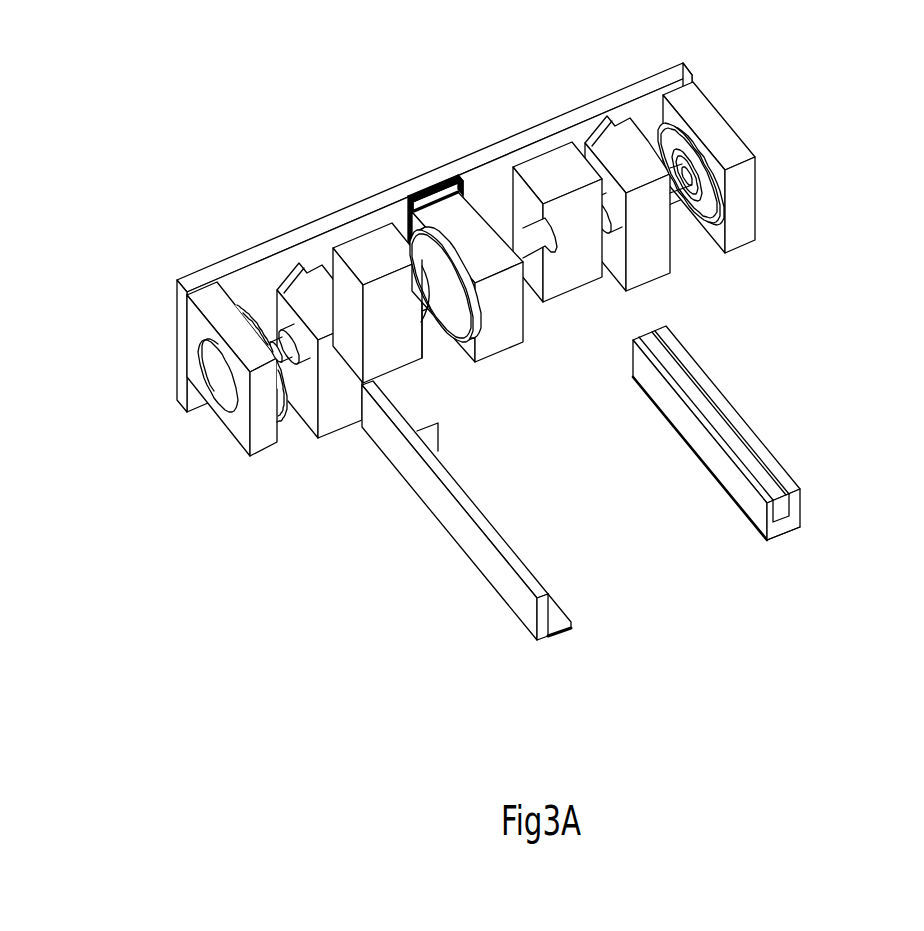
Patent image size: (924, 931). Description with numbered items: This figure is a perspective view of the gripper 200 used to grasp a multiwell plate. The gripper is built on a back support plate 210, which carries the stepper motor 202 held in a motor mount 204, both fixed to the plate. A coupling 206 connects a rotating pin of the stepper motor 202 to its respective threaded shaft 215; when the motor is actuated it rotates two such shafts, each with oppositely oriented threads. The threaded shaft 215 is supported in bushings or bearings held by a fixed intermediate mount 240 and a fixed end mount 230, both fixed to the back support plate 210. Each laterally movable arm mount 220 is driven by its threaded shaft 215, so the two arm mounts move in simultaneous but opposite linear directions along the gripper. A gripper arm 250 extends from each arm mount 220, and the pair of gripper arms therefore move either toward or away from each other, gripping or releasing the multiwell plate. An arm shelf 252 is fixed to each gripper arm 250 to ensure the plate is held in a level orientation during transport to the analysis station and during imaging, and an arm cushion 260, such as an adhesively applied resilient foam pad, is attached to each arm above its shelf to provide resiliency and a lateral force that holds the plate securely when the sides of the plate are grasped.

The gripper 200 is at (487, 349).
The stepper motor 202 is at (472, 215).
The motor mount 204 is at (500, 196).
The coupling 206 is at (406, 266).
The back support plate 210 is at (278, 247).
The threaded shaft 215 is at (283, 362).
The laterally movable arm mount 220 is at (305, 288).
The fixed end mount 230 is at (213, 300).
The fixed intermediate mount 240 is at (340, 240).
The gripper arm 250 is at (493, 567).
The arm shelf 252 is at (760, 528).
The arm cushion 260 is at (653, 480).